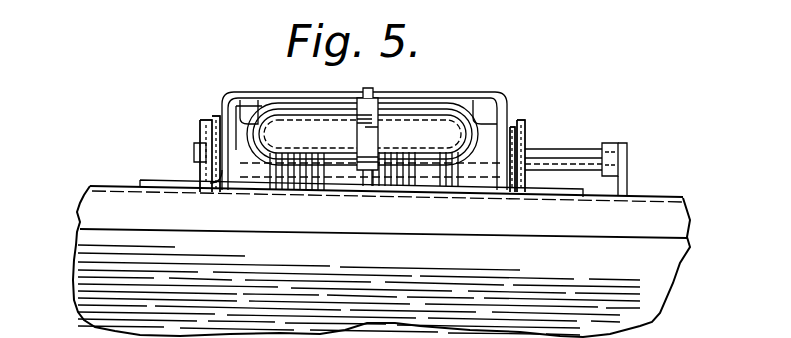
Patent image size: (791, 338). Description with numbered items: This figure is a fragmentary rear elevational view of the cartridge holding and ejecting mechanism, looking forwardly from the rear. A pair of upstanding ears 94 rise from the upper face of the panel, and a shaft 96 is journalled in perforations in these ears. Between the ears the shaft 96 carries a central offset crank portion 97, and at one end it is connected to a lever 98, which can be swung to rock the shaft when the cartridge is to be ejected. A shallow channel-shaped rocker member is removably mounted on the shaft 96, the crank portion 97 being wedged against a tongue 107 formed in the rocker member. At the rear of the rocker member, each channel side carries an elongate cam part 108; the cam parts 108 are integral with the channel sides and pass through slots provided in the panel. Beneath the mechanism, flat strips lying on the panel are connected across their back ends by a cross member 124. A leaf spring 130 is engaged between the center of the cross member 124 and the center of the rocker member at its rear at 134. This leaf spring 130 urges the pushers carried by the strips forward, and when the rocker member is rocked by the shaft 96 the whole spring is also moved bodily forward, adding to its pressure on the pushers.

The upstanding ears 94 is at (203, 124).
The shaft 96 is at (560, 158).
The central offset crank portion 97 is at (438, 103).
The lever 98 is at (628, 184).
The tongue 107 is at (390, 120).
The elongate cam part 108 is at (258, 180).
The cross member 124 is at (346, 166).
The leaf spring 130 is at (356, 139).
The rear engagement point of rocker member 134 is at (363, 90).